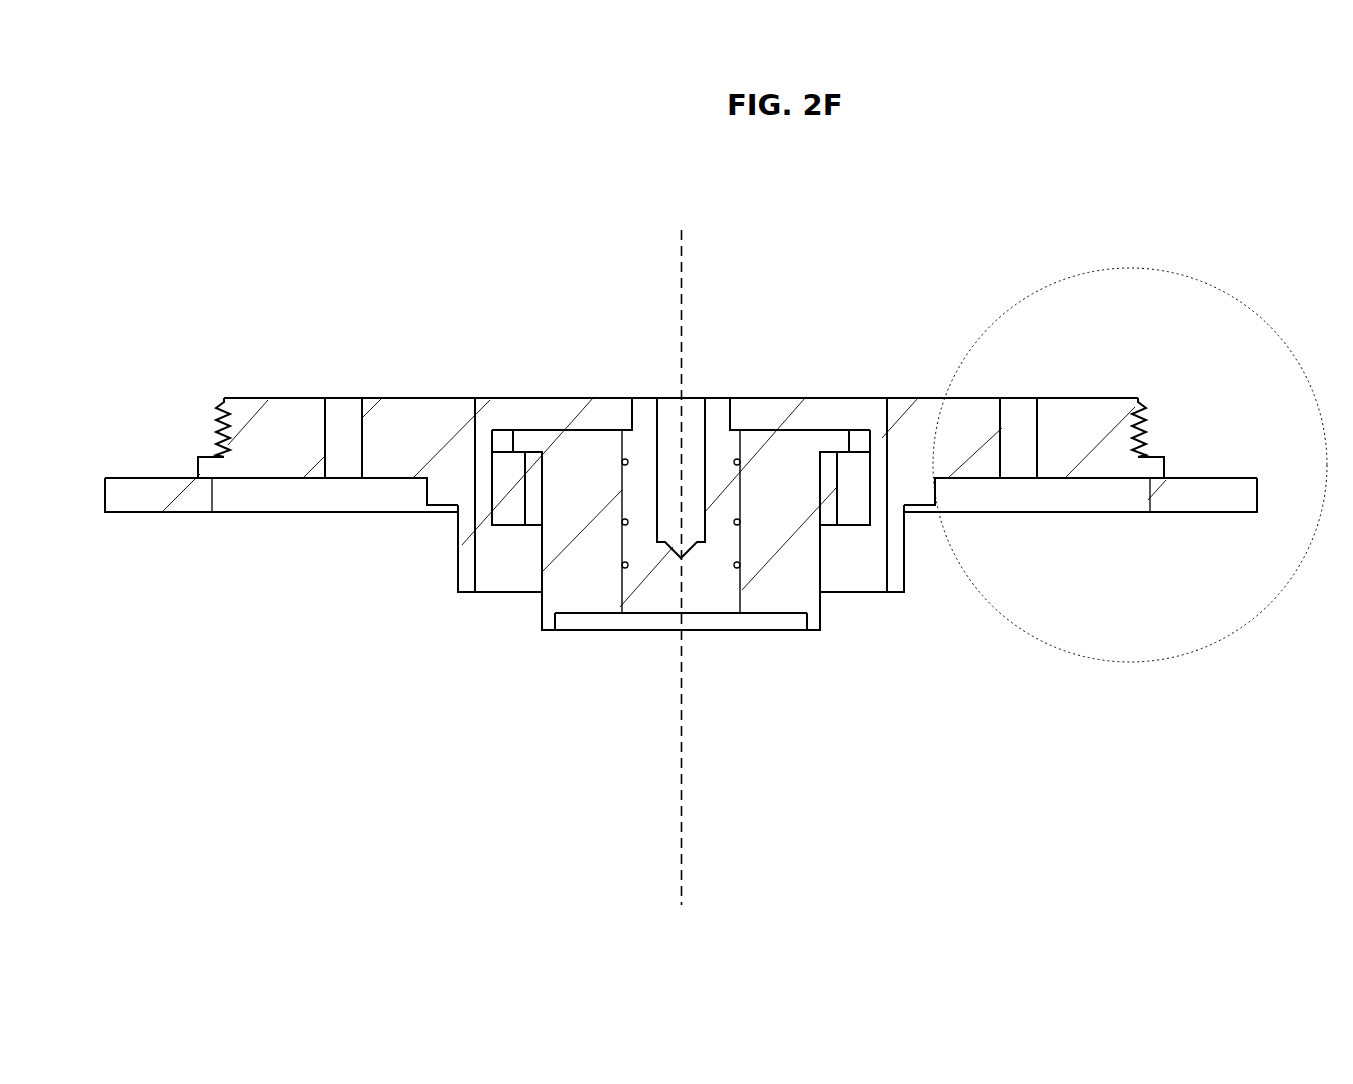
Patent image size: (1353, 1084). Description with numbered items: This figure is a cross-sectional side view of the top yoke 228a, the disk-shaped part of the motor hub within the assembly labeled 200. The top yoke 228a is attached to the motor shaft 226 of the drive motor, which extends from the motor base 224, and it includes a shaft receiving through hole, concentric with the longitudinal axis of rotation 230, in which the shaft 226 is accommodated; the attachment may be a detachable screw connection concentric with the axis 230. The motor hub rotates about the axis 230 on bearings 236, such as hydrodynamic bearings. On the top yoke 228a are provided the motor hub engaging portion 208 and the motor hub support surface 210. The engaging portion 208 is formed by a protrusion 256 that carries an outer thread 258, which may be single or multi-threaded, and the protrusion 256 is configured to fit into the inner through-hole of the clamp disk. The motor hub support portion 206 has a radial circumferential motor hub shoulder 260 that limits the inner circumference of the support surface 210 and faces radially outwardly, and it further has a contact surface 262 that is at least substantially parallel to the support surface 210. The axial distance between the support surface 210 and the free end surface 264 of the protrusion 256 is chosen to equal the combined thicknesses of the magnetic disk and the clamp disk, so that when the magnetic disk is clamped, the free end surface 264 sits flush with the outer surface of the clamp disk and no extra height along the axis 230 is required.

The top planar view 200 is at (1310, 216).
The motor hub support portion 206 is at (414, 422).
The motor hub engaging portion 208 is at (242, 418).
The motor hub support surface 210 is at (155, 483).
The motor base 224 is at (668, 633).
The motor shaft 226 is at (705, 587).
The top yoke 228a is at (587, 363).
The longitudinal axis of rotation 230 is at (675, 723).
The bearings 236 is at (502, 478).
The protrusion 256 is at (275, 417).
The outer thread 258 is at (220, 428).
The radial circumferential motor hub shoulder 260 is at (197, 462).
The contact surface 262 is at (213, 458).
The free end surface 264 is at (806, 398).